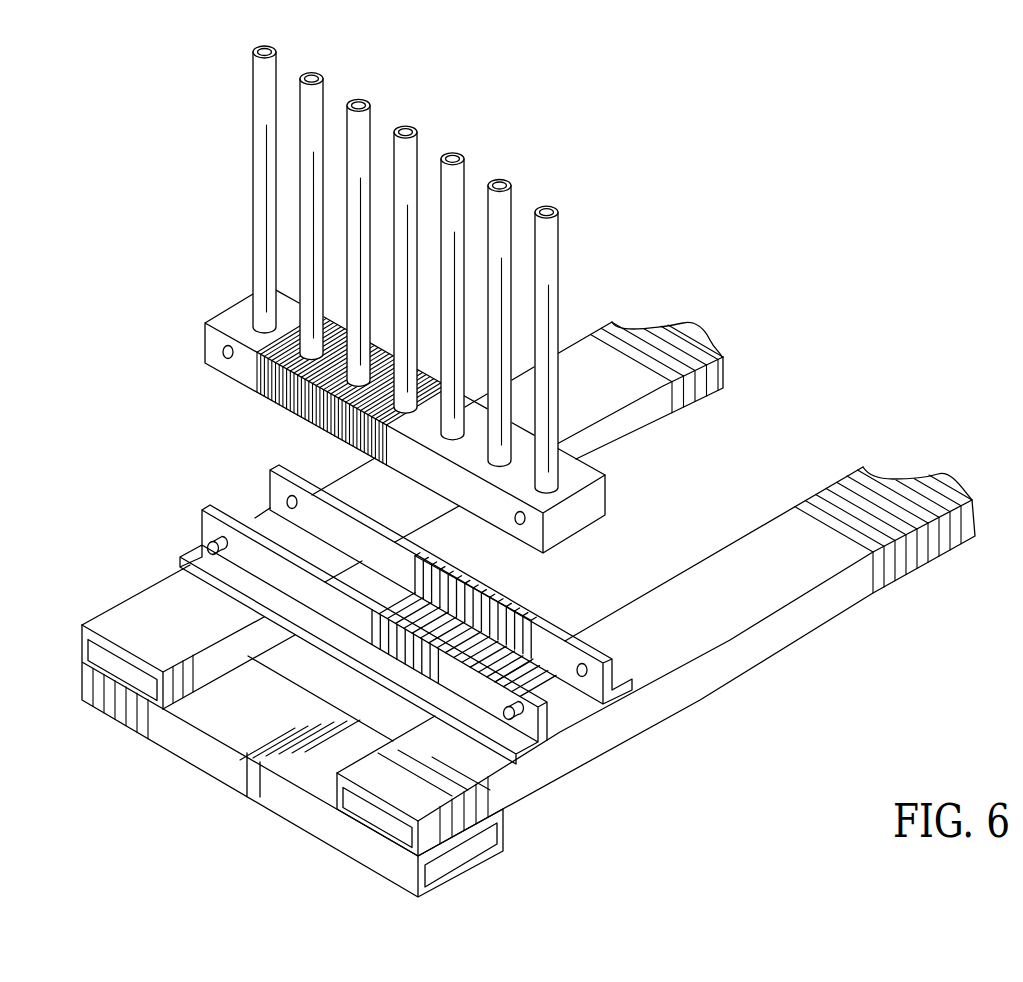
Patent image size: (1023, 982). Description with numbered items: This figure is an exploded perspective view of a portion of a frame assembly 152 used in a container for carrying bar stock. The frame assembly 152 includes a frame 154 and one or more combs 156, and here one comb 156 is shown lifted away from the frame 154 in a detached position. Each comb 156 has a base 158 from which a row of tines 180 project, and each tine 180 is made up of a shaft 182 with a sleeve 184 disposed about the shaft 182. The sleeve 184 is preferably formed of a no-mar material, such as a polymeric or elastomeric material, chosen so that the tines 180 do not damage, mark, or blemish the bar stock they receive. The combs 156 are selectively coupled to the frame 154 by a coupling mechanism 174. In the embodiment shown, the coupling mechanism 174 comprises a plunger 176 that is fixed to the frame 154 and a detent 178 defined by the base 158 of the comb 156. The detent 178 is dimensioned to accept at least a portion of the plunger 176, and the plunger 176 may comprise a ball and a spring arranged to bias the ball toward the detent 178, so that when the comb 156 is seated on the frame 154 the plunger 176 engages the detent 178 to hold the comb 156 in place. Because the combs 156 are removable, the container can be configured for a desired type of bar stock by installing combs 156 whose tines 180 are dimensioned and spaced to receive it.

The frame assembly 152 is at (842, 630).
The frame 154 is at (585, 768).
The comb 156 is at (405, 426).
The base 158 is at (226, 320).
The coupling mechanism 174 is at (370, 304).
The plunger 176 is at (207, 538).
The detent 178 is at (221, 351).
The tine 180 is at (568, 302).
The shaft 182 is at (600, 326).
The sleeve 184 is at (600, 349).